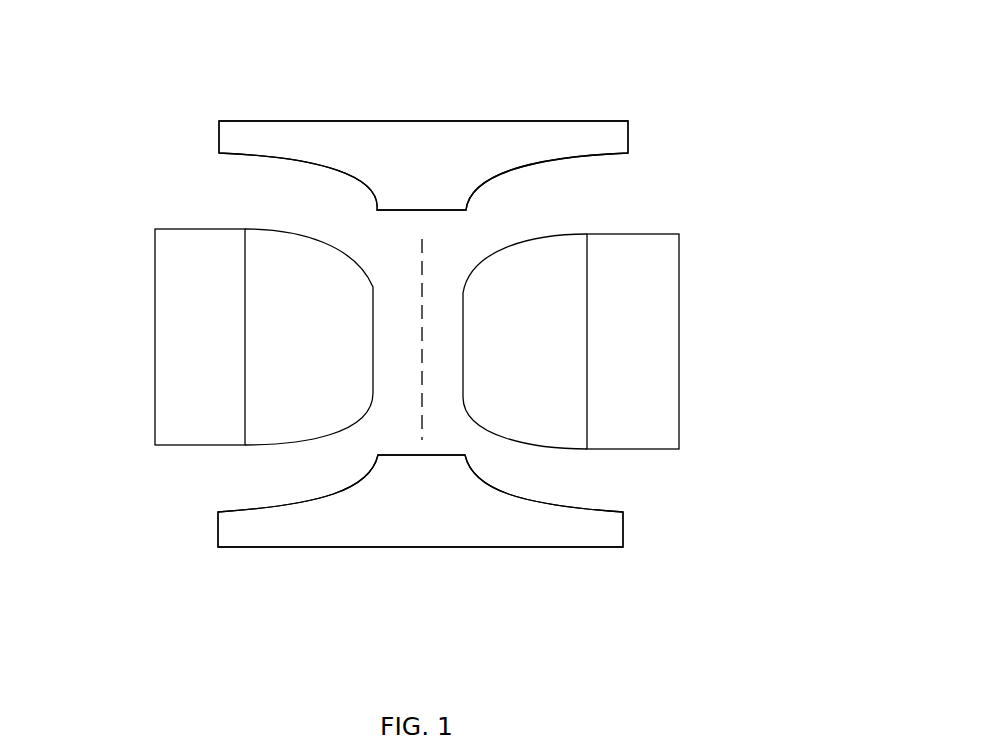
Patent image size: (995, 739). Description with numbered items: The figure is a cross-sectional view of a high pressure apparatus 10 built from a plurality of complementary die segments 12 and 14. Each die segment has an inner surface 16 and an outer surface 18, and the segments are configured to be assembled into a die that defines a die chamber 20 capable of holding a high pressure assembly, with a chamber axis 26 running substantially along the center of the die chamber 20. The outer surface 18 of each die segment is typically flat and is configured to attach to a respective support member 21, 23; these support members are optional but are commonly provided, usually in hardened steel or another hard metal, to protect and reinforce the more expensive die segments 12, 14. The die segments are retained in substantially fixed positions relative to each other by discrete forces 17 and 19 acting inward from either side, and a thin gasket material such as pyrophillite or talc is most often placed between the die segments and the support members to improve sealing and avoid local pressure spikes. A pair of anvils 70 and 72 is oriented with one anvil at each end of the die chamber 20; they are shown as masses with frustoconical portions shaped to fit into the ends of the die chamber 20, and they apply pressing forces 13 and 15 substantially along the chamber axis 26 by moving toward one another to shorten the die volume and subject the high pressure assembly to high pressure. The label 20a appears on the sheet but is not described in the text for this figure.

The high pressure apparatus 10 is at (660, 117).
The die segment 12 is at (309, 337).
The die segment 14 is at (525, 341).
The support member 21 is at (200, 337).
The support member 23 is at (633, 341).
The anvil 72 is at (423, 165).
The anvil 70 is at (420, 501).
The chamber axis 26 is at (429, 262).
The die chamber 20 is at (393, 303).
The inner surface 16 is at (460, 388).
The outer surface 18 is at (586, 374).
The pressing force 15 is at (420, 119).
The pressing force 13 is at (418, 548).
The discrete force 17 is at (155, 337).
The discrete force 19 is at (682, 343).
The forming gap portion 20a is at (637, 735).